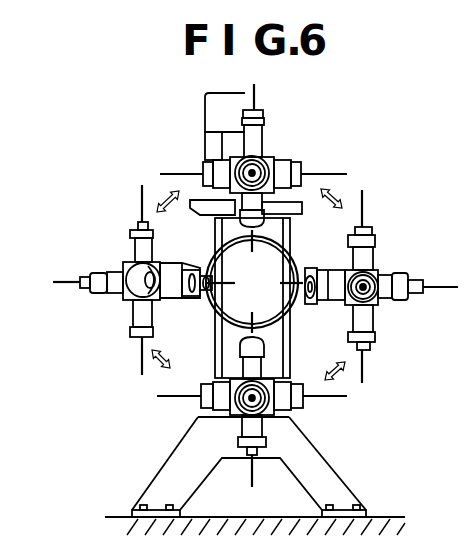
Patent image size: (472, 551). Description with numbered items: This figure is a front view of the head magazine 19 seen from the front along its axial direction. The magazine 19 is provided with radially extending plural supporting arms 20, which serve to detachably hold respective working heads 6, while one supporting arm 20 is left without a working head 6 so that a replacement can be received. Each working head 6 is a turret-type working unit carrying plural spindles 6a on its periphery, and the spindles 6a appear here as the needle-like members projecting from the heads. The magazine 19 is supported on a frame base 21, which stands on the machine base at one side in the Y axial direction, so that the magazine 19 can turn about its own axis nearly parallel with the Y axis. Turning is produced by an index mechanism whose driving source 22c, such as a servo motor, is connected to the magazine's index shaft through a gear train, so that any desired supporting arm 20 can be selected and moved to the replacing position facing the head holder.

The working head 6 is at (292, 172).
The spindle 6a is at (257, 90).
The magazine 19 is at (282, 148).
The supporting arm 20 is at (300, 268).
The frame base 21 is at (333, 472).
The driving source 22c is at (212, 121).